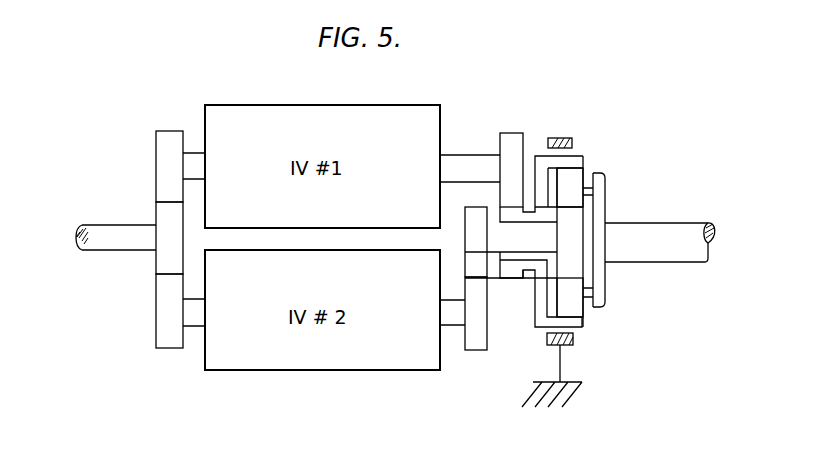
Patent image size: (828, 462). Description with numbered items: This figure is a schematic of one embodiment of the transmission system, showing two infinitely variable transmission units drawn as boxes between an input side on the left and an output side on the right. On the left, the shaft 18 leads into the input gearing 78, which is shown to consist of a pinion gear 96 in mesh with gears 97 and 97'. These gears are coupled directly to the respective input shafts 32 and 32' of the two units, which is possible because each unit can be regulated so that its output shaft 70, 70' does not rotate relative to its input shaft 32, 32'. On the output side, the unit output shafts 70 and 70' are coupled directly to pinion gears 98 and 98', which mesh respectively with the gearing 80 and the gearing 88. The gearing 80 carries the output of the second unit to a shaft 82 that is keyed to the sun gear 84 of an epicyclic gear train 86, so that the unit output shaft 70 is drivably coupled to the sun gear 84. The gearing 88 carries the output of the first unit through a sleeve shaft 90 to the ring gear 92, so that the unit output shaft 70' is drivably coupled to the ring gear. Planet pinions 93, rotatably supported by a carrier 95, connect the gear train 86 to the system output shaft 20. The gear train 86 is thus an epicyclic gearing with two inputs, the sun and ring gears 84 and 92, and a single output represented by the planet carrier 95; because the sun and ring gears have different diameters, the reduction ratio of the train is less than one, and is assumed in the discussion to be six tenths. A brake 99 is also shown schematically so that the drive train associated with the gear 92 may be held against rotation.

The input shaft 18 is at (101, 233).
The system output shaft 20 is at (648, 232).
The input shaft 32 is at (209, 326).
The input shaft 32' is at (177, 141).
The unit output shaft 70 is at (431, 319).
The unit output shaft 70' is at (470, 151).
The input gearing 78 is at (148, 352).
The gearing 80 is at (477, 237).
The shaft 82 is at (519, 250).
The sun gear 84 is at (570, 248).
The epicyclic gear train 86 is at (603, 349).
The gearing 88 is at (505, 278).
The sleeve shaft 90 is at (528, 271).
The ring gear 92 is at (575, 166).
The planet pinions 93 is at (575, 179).
The carrier 95 is at (598, 196).
The pinion gear 96 is at (162, 259).
The gear 97 is at (140, 311).
The gear 97' is at (143, 166).
The pinion gear 98 is at (467, 326).
The pinion gear 98' is at (503, 152).
The brake 99 is at (559, 137).